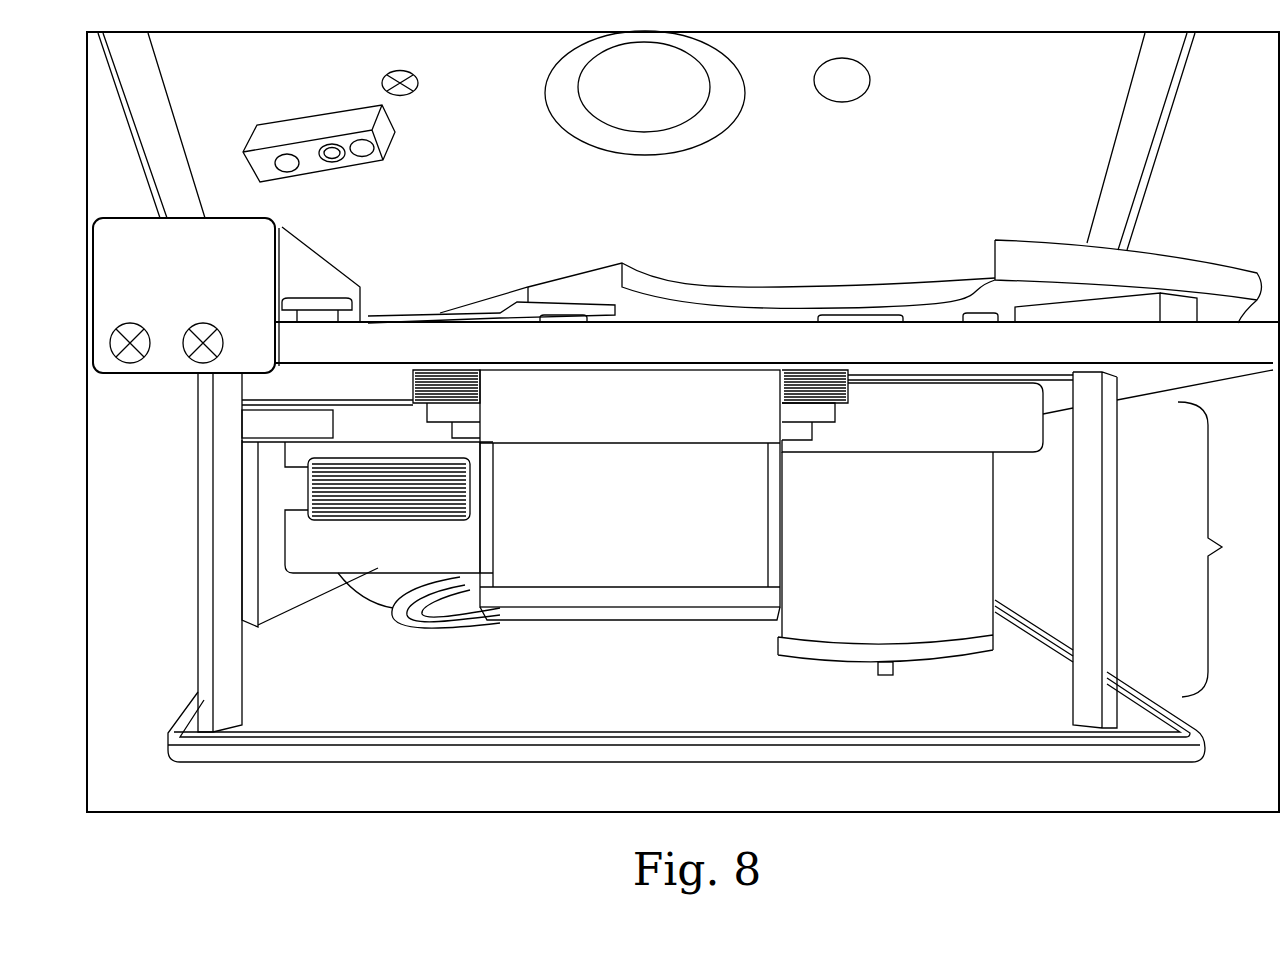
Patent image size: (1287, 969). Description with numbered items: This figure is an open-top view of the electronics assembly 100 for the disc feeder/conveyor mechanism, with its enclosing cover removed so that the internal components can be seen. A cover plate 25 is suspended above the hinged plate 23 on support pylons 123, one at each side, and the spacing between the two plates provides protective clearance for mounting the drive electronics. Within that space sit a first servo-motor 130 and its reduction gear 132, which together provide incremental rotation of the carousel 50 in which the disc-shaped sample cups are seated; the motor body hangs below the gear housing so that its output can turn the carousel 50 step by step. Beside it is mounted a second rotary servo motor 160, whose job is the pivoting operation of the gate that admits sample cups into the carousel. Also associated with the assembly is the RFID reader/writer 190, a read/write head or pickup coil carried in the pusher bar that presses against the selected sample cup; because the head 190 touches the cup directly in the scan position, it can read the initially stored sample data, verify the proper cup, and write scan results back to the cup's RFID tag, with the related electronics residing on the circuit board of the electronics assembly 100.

The hinged plate 23 is at (686, 354).
The cover plate 25 is at (651, 699).
The carousel 50 is at (1157, 247).
The electronics assembly 100 is at (1223, 549).
The support pylons 123 is at (208, 519).
The first servo-motor 130 is at (908, 637).
The reduction gear 132 is at (952, 438).
The second rotary servo motor 160 is at (378, 568).
The RFID reader/writer 190 is at (550, 613).